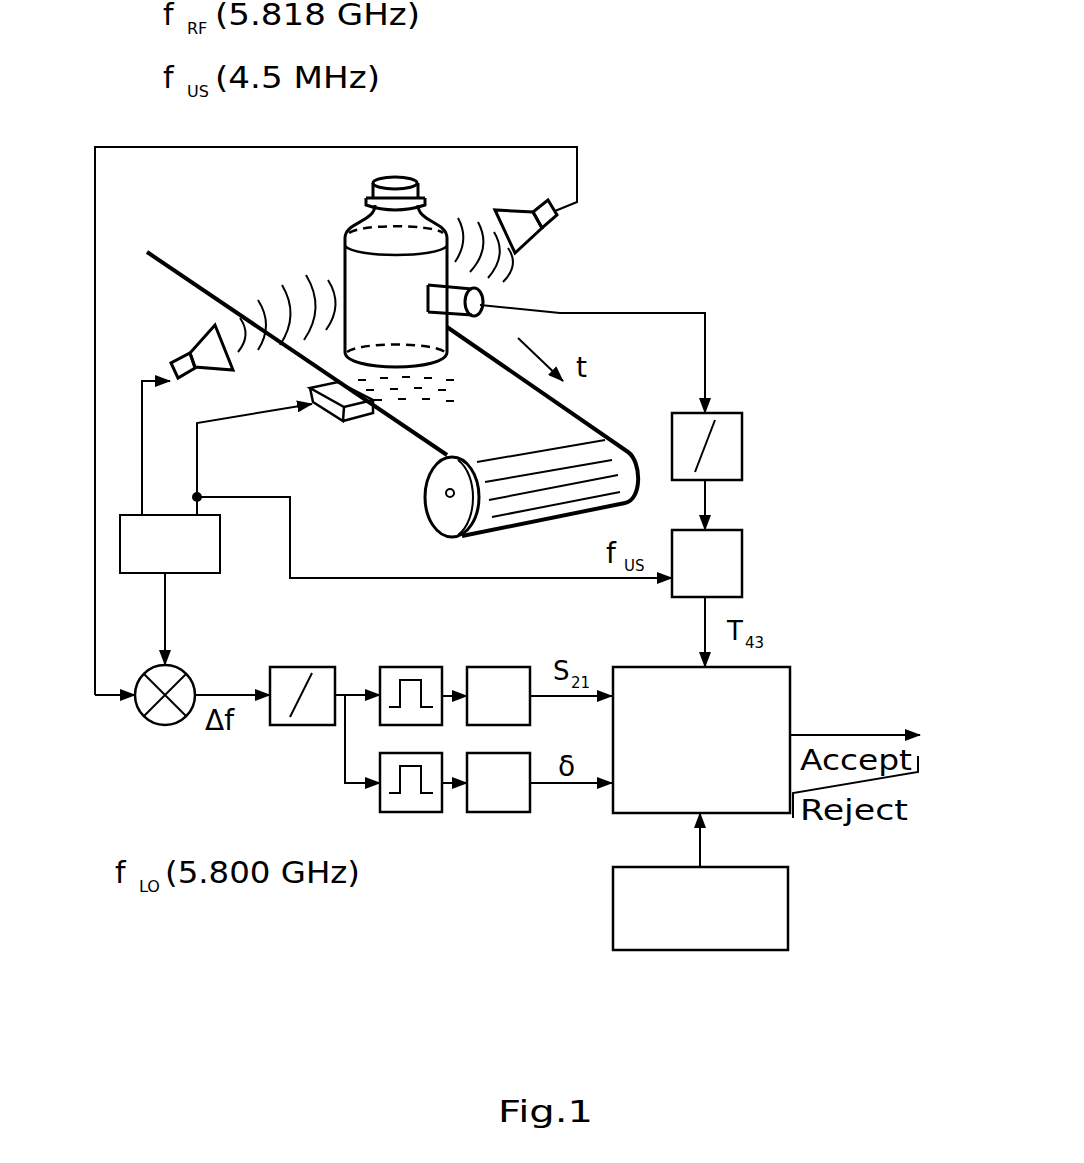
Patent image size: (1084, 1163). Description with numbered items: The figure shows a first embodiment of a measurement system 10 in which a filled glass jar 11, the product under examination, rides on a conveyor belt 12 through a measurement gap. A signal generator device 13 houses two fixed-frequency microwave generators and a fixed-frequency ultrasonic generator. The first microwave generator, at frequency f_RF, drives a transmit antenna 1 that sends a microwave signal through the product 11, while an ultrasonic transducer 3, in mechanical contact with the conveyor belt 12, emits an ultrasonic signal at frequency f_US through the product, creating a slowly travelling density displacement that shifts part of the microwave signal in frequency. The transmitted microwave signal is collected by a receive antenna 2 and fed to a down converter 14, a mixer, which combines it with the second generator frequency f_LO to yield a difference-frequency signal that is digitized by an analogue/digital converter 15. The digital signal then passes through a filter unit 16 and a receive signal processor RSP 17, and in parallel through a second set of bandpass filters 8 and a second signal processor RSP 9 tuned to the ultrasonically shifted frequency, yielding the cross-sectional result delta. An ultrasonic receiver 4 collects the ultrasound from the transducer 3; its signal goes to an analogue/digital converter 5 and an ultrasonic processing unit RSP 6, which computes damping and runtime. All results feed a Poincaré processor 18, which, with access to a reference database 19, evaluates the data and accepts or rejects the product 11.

The transmit antenna 1 is at (251, 326).
The receive antenna 2 is at (506, 225).
The ultrasonic transducer 3 is at (332, 416).
The ultrasonic receiver 4 is at (479, 297).
The analogue/digital converter 5 is at (732, 435).
The ultrasonic processing unit RSP 6 is at (732, 582).
The second set of bandpass filters 8 is at (410, 812).
The second digital signal processor RSP 9 is at (498, 812).
The system 10 is at (670, 192).
The filled glass jar 11 is at (412, 220).
The conveyor belt 12 is at (567, 422).
The signal generator device 13 is at (243, 848).
The down converter 14 is at (170, 665).
The analogue/digital converter 15 is at (300, 671).
The filter unit 16 is at (408, 672).
The receive signal processor RSP 17 is at (495, 672).
The Poincaré processor 18 is at (768, 693).
The reference database 19 is at (713, 940).